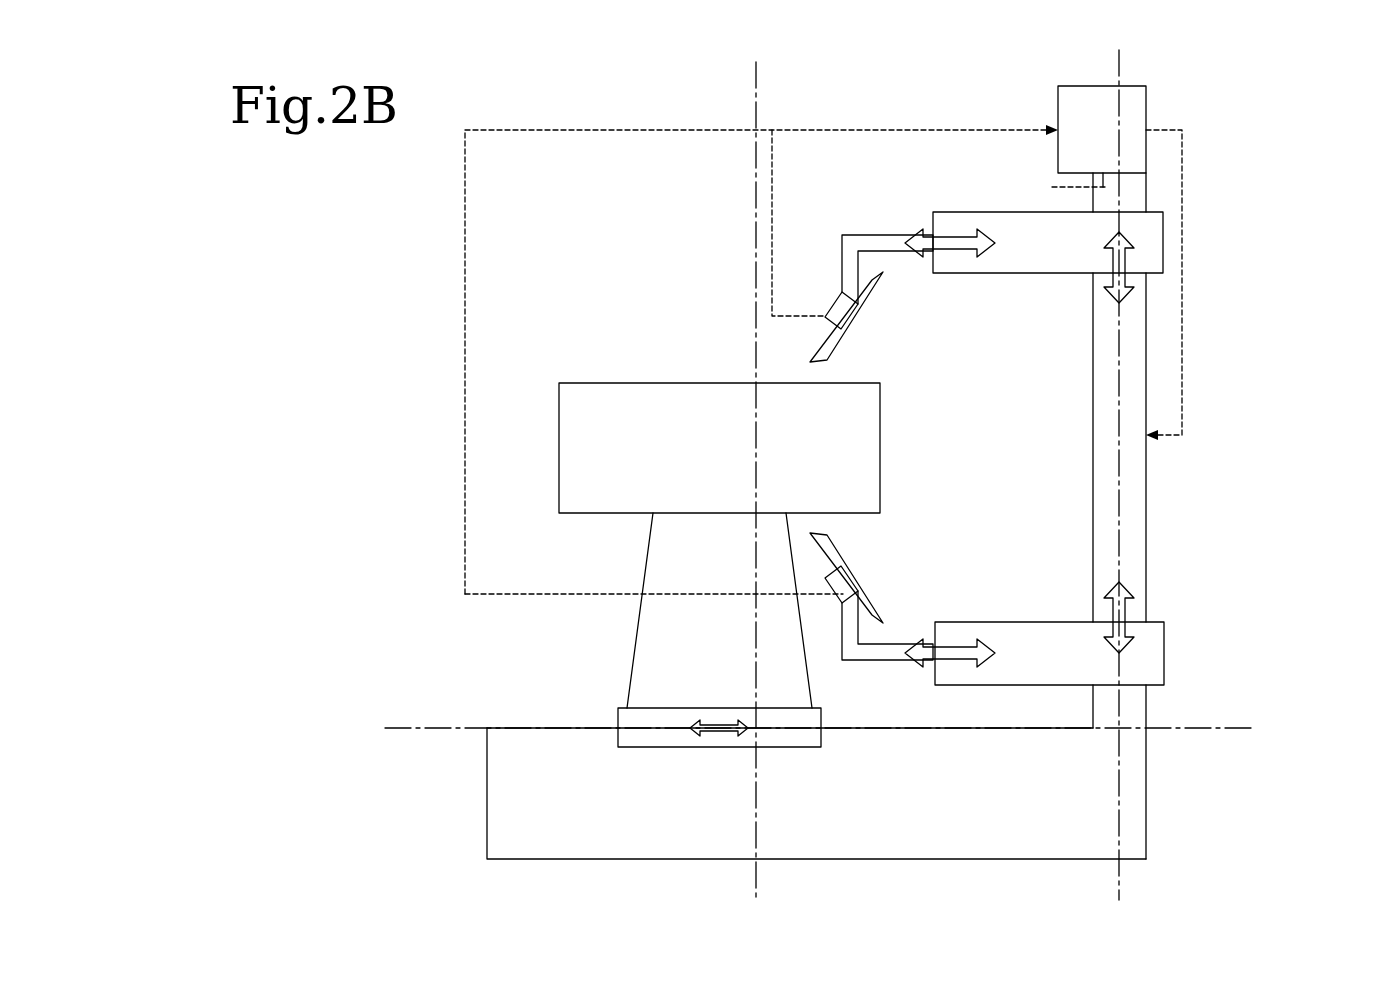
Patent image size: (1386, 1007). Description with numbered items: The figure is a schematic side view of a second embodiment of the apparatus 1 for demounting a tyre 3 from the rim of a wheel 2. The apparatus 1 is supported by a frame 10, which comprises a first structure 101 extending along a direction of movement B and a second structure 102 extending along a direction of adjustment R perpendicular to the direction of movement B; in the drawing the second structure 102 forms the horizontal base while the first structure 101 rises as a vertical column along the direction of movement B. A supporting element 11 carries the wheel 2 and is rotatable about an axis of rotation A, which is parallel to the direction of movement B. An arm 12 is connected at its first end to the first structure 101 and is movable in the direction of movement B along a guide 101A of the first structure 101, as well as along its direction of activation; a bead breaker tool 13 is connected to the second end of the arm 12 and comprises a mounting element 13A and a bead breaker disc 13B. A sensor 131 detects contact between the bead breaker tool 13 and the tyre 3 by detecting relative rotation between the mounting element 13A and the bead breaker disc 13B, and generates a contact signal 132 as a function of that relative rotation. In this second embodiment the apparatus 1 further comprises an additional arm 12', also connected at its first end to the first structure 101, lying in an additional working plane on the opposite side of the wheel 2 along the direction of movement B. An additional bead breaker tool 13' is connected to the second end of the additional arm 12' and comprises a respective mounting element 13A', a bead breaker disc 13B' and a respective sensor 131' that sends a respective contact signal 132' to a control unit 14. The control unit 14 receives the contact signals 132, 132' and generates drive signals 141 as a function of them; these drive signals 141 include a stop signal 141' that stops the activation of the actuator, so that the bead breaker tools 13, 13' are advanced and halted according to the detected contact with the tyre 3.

The apparatus 1 is at (1248, 253).
The wheel 2 is at (589, 415).
The tyre 3 is at (585, 455).
The frame 10 is at (487, 797).
The supporting element 11 is at (647, 672).
The arm 12 is at (1081, 248).
The additional arm 12' is at (1070, 633).
The bead breaker tool 13 is at (920, 298).
The additional bead breaker tool 13' is at (912, 582).
The mounting element 13A is at (870, 247).
The mounting element 13A' is at (885, 653).
The bead breaker disc 13B is at (871, 332).
The bead breaker disc 13B' is at (876, 529).
The sensor 131 is at (906, 333).
The sensor 131' is at (904, 534).
The contact signal 132 is at (811, 195).
The contact signal 132' is at (761, 330).
The control unit 14 is at (1130, 98).
The drive signals 141 is at (1051, 176).
The stop signal 141' is at (1222, 268).
The first structure 101 is at (1132, 488).
The guide 101A is at (1119, 516).
The second structure 102 is at (1132, 820).
The axis of rotation A is at (756, 95).
The direction of movement B is at (1119, 60).
The direction of adjustment R is at (1249, 727).